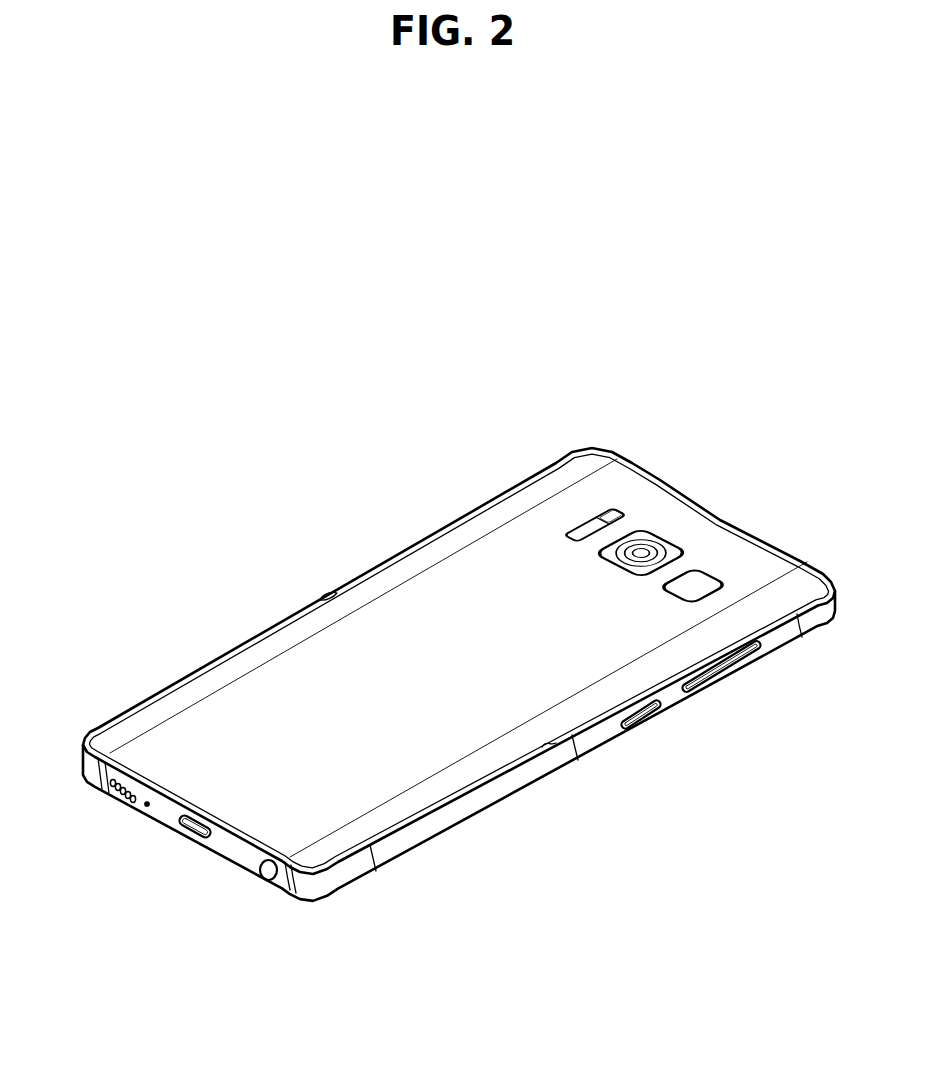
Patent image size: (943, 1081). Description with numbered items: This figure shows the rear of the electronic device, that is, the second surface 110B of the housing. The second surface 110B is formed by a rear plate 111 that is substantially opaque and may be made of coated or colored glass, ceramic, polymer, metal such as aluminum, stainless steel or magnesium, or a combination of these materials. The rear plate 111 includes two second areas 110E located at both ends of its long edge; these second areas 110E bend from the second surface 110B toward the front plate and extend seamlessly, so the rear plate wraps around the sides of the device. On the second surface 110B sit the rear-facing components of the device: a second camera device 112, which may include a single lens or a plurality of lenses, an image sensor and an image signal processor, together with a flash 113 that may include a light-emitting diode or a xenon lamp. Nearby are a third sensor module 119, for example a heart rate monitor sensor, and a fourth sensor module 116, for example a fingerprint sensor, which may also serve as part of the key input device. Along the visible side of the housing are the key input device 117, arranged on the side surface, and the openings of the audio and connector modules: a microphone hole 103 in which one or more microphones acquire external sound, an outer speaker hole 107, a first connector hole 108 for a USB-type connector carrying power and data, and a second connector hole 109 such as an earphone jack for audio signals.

The microphone hole 103 is at (149, 802).
The outer speaker hole 107 is at (112, 789).
The first connector hole 108 is at (190, 826).
The second connector hole 109 is at (266, 878).
The second surface 110B is at (469, 586).
The second areas 110E is at (331, 594).
The rear plate 111 is at (297, 673).
The second camera device 112 is at (641, 552).
The flash 113 is at (611, 512).
The fourth sensor module 116 is at (695, 588).
The key input device 117 is at (663, 708).
The third sensor module 119 is at (583, 526).